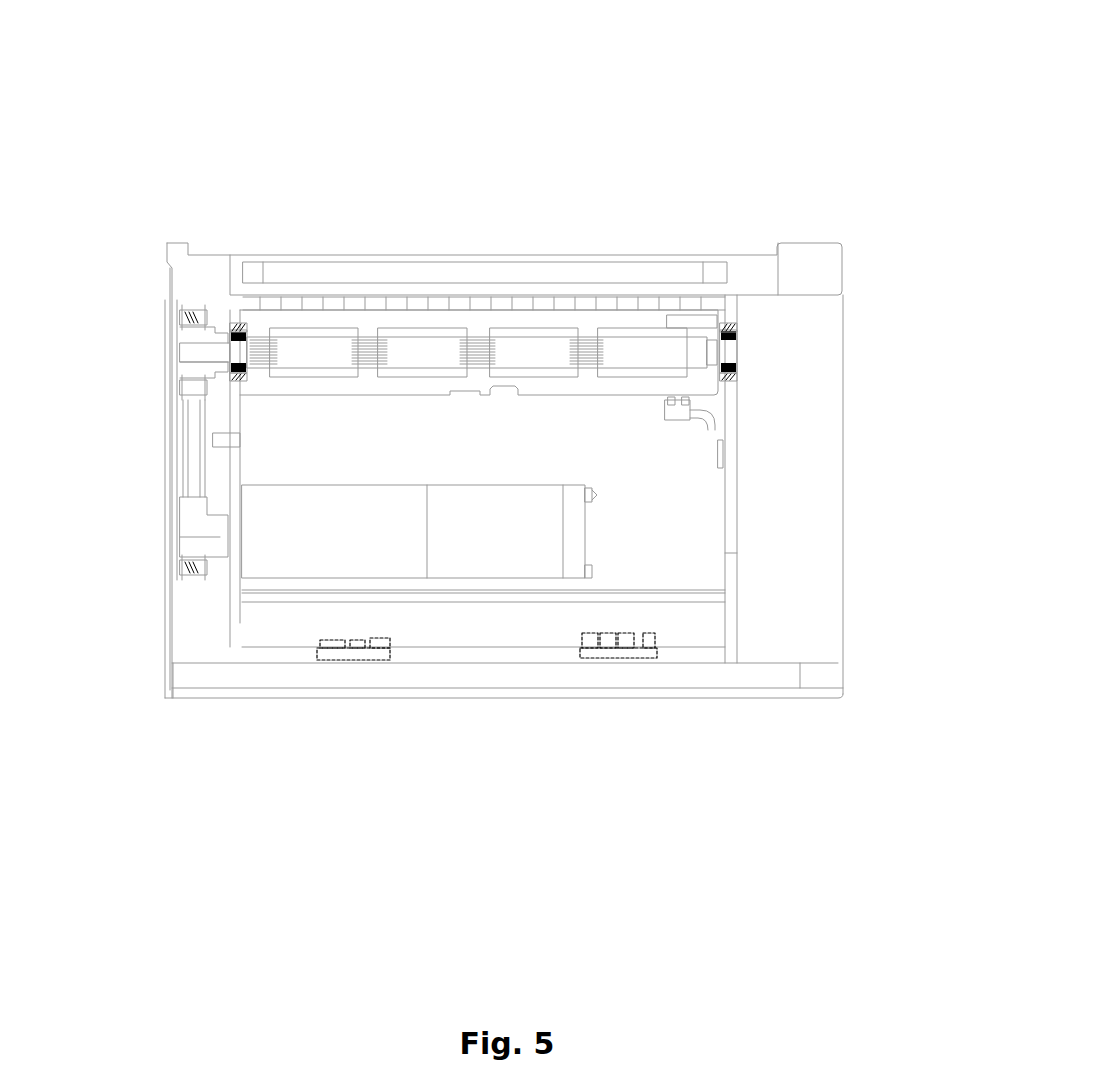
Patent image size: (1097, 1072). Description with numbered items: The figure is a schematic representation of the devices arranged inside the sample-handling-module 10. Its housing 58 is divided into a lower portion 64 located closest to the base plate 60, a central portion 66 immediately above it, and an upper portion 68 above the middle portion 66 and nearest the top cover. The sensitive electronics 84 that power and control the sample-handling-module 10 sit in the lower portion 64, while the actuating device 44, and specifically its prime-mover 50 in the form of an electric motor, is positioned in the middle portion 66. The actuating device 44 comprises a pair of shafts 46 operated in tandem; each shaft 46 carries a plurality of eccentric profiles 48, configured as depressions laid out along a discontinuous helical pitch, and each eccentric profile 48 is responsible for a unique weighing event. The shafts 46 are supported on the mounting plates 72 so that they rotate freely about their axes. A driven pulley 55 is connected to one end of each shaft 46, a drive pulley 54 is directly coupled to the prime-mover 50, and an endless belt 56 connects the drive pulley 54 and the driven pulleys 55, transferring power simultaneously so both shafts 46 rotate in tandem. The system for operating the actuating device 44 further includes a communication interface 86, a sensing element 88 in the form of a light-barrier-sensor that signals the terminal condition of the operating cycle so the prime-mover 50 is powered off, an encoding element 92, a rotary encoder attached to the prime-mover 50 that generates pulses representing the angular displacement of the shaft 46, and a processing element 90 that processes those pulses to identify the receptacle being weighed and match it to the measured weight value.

The sample-handling-module 10 is at (817, 160).
The actuating device 44 is at (306, 441).
The shaft 46 is at (247, 303).
The eccentric profile 48 is at (518, 414).
The prime-mover 50 is at (262, 598).
The drive pulley 54 is at (159, 510).
The driven pulley 55 is at (160, 360).
The endless belt 56 is at (183, 290).
The housing 58 is at (871, 288).
The base plate 60 is at (728, 720).
The lower portion 64 is at (300, 650).
The central portion 66 is at (690, 548).
The upper portion 68 is at (782, 341).
The mounting plate 72 is at (206, 631).
The sensitive electronics 84 is at (346, 680).
The communication interface 86 is at (680, 479).
The sensing element 88 is at (703, 430).
The processing element 90 is at (597, 680).
The encoding element 92 is at (486, 600).